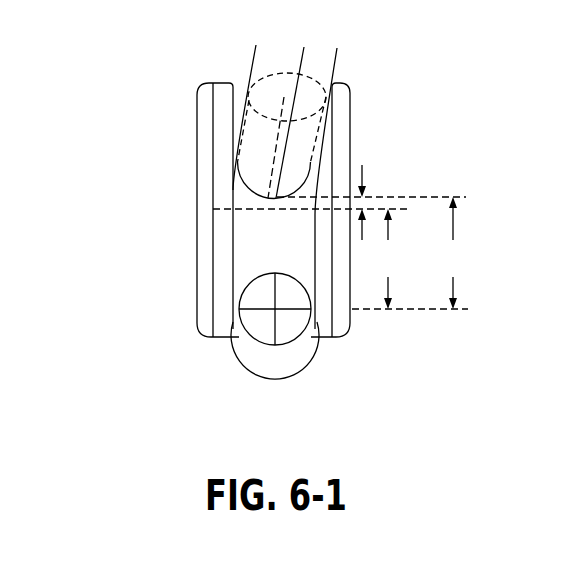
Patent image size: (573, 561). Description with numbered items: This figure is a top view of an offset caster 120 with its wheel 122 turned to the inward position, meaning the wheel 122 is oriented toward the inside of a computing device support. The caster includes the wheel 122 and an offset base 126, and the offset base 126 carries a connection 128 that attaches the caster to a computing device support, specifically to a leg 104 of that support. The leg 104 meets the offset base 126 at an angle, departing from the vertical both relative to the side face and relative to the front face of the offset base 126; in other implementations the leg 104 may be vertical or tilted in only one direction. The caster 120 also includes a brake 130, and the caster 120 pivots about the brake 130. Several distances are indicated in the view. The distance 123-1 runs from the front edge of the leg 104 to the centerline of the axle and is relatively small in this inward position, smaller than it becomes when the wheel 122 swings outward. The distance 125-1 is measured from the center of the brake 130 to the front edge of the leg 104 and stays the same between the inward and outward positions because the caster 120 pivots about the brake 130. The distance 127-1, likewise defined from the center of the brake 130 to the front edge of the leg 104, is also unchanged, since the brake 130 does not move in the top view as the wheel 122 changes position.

The offset caster 120 is at (138, 63).
The leg 104 is at (338, 63).
The wheel 122 is at (198, 322).
The offset base 126 is at (290, 262).
The connection 128 is at (283, 87).
The brake 130 is at (284, 351).
The distance 123-1 is at (364, 204).
The distance 125-1 is at (410, 259).
The distance 127-1 is at (451, 253).